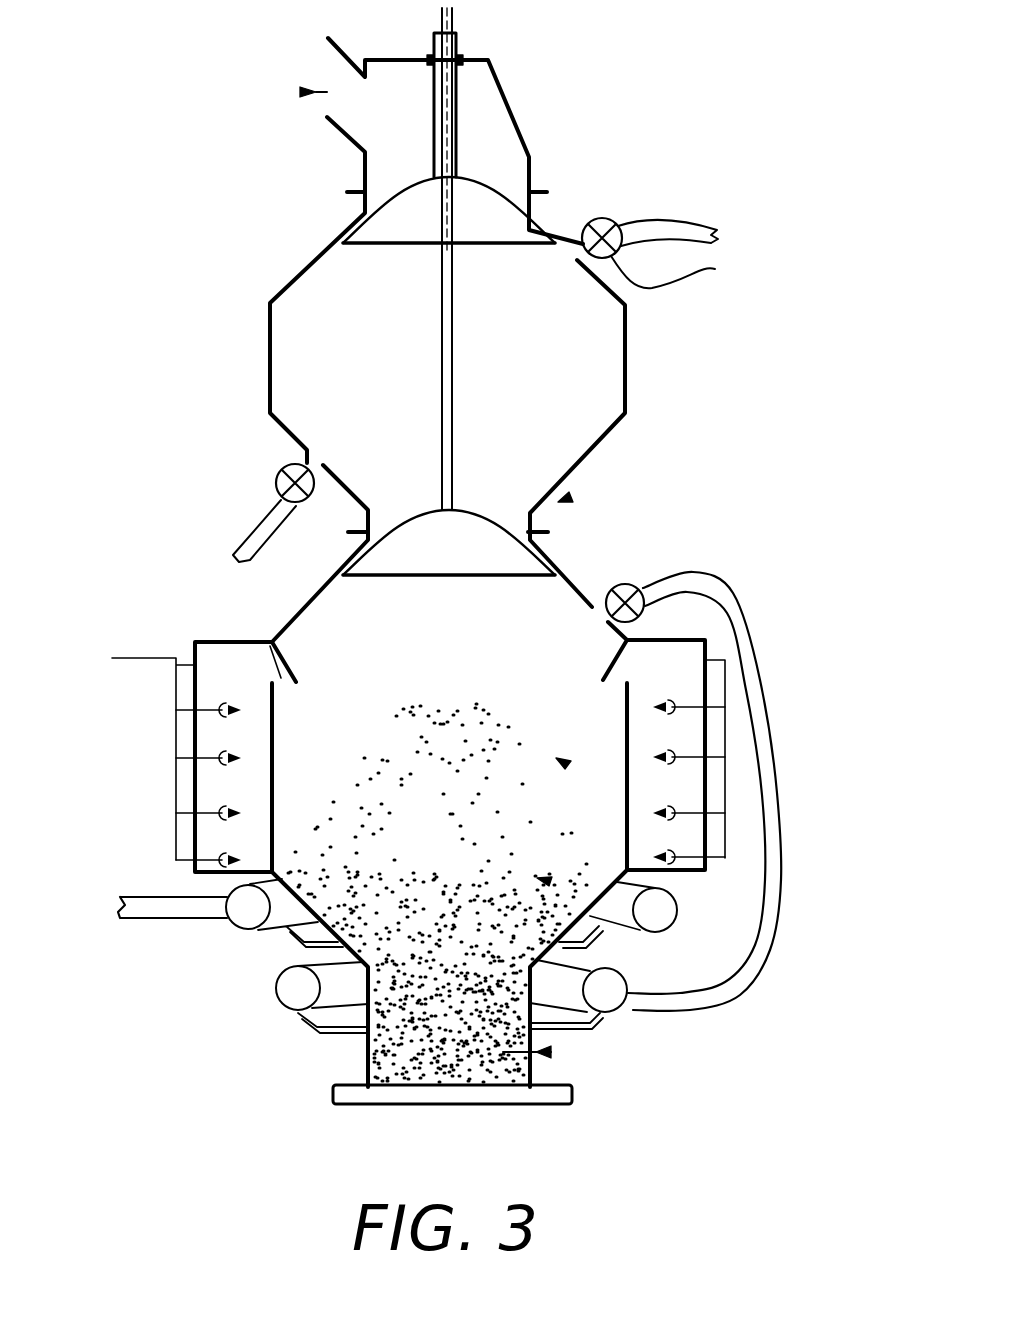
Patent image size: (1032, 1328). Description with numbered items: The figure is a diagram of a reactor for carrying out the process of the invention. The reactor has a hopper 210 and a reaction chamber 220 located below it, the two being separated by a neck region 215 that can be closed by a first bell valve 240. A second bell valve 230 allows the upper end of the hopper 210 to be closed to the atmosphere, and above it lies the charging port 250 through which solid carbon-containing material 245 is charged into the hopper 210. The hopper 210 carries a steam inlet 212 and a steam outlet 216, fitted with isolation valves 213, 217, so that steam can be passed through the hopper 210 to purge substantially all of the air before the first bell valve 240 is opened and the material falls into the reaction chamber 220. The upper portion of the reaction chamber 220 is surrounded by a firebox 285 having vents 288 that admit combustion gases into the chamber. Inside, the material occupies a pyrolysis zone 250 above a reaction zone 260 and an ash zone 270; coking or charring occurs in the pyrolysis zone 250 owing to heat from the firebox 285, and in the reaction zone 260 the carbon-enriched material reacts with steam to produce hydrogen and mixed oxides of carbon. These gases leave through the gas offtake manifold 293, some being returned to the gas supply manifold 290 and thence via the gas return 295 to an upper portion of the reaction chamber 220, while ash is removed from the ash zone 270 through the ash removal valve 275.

The hopper 210 is at (612, 436).
The steam inlet 212 is at (687, 226).
The isolation valve 213 is at (715, 269).
The neck region 215 is at (562, 500).
The steam outlet 216 is at (268, 531).
The isolation valve 217 is at (303, 463).
The reaction chamber 220 is at (272, 847).
The second bell valve 230 is at (481, 207).
The first bell valve 240 is at (393, 562).
The carbon-containing material 245 is at (318, 293).
The charging port 250 is at (300, 93).
The reaction zone 260 is at (563, 885).
The ash zone 270 is at (551, 1052).
The ash removal valve 275 is at (510, 1104).
The firebox 285 is at (215, 725).
The vents 288 is at (272, 642).
The gas supply manifold 290 is at (292, 1000).
The gas offtake manifold 293 is at (155, 903).
The gas return 295 is at (740, 594).